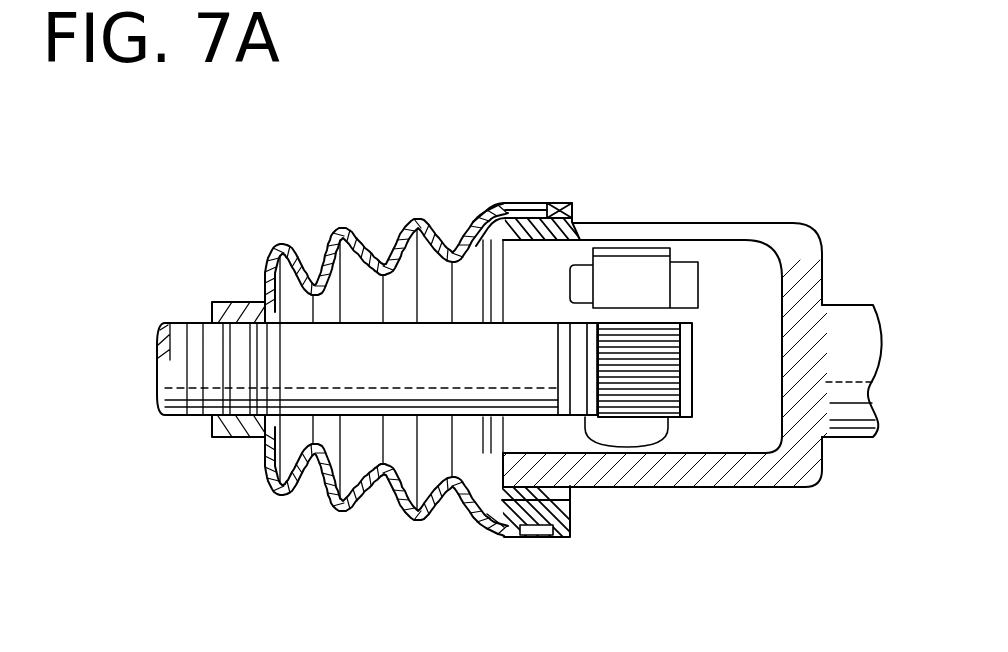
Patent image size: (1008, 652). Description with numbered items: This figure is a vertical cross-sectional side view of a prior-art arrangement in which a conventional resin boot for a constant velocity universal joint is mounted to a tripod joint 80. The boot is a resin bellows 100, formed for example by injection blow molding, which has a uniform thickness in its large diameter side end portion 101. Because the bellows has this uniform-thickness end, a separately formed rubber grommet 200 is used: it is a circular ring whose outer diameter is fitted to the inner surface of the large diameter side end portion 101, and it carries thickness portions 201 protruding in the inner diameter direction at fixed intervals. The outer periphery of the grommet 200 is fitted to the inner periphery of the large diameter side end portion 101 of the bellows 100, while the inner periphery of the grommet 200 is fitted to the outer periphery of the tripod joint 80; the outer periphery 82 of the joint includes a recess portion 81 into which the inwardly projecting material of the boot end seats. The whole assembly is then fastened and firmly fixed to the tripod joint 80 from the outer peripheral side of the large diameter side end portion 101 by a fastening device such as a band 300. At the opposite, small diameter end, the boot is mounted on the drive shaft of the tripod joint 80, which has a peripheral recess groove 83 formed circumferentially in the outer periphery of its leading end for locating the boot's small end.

The tripod joint 80 is at (717, 224).
The recess portion 81 is at (587, 498).
The outer periphery 82 is at (560, 207).
The peripheral recess groove 83 is at (242, 370).
The resin bellows 100 is at (339, 229).
The large diameter side end portion 101 is at (518, 202).
The rubber grommet 200 is at (573, 505).
The thickness portions 201 is at (493, 527).
The band 300 is at (535, 537).